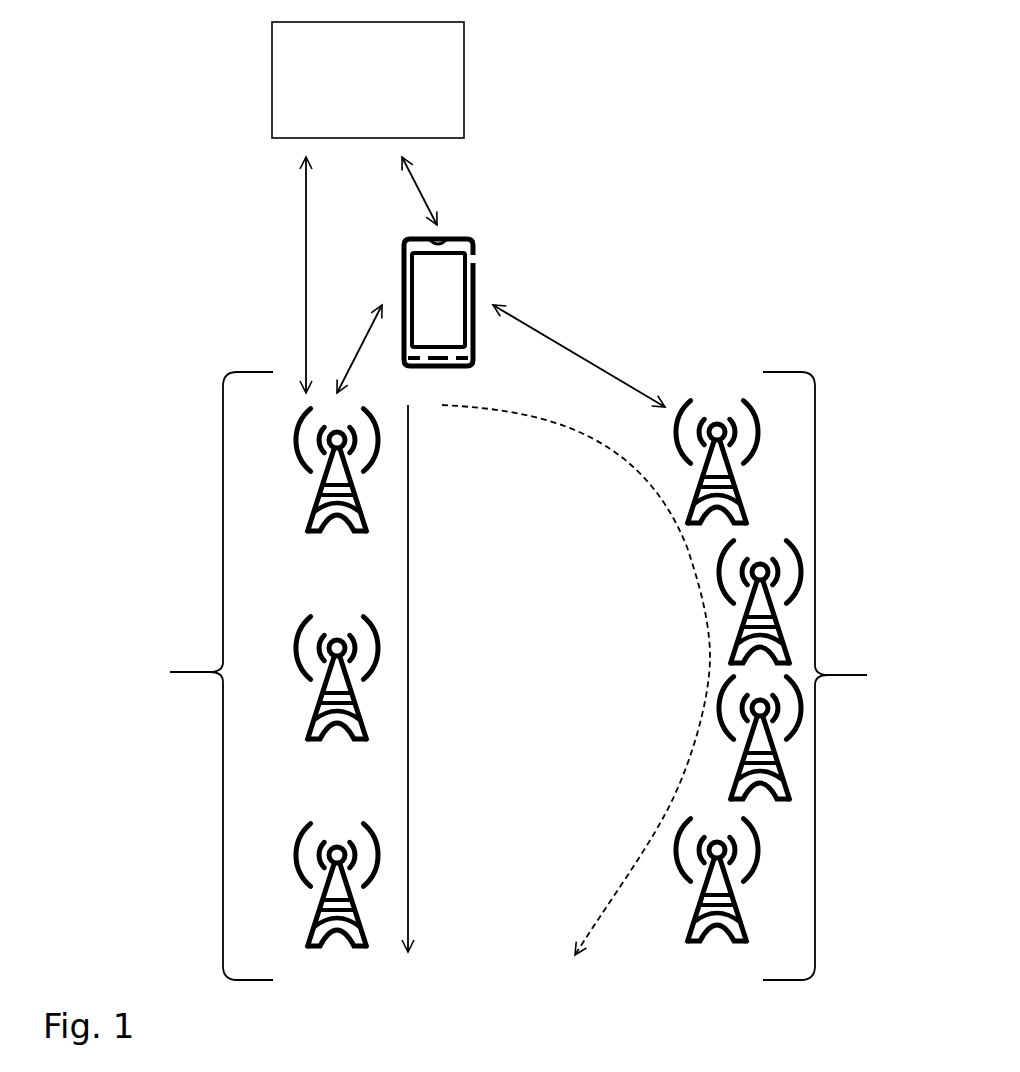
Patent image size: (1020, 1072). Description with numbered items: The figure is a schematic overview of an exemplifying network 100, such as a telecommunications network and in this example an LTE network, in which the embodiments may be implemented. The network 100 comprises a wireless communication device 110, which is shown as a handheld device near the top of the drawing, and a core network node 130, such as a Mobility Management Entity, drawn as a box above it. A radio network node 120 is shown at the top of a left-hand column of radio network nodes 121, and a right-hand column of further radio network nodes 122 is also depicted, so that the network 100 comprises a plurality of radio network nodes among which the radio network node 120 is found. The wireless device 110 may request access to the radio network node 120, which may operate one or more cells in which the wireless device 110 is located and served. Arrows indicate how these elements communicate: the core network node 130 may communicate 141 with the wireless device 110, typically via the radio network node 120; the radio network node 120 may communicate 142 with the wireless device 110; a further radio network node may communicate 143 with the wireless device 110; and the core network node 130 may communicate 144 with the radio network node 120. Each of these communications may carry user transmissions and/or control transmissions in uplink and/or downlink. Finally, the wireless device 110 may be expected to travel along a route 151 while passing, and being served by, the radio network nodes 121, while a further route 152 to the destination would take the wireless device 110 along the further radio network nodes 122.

The network 100 is at (155, 134).
The wireless communication device 110 is at (438, 302).
The radio network node 120 is at (316, 482).
The radio network nodes 121 is at (215, 676).
The further radio network nodes 122 is at (821, 676).
The core network node 130 is at (368, 80).
The communication between core network node and wireless device 141 is at (397, 191).
The communication between radio network node and wireless device 142 is at (349, 349).
The communication between further radio network node and wireless device 143 is at (579, 356).
The communication between core network node and radio network node 144 is at (279, 275).
The route 151 is at (433, 678).
The further route 152 is at (576, 680).